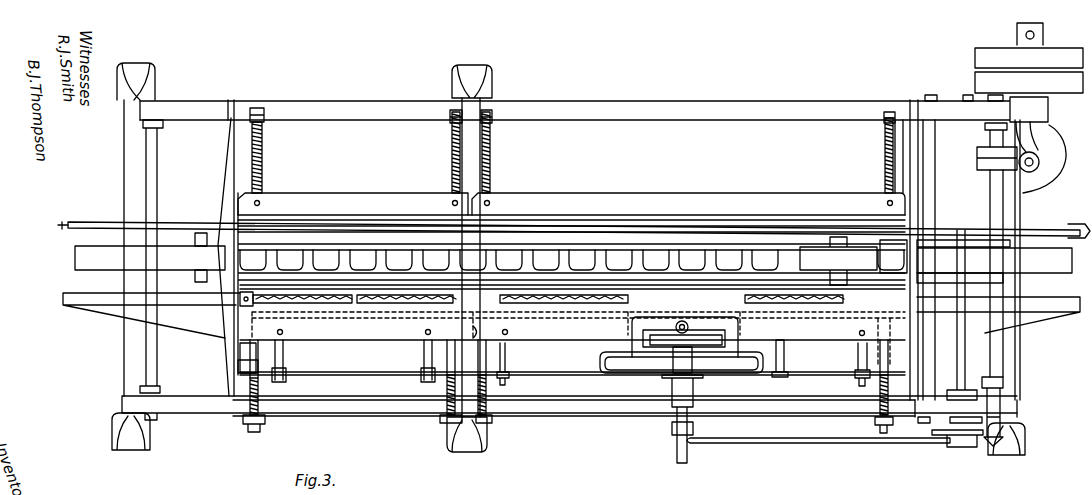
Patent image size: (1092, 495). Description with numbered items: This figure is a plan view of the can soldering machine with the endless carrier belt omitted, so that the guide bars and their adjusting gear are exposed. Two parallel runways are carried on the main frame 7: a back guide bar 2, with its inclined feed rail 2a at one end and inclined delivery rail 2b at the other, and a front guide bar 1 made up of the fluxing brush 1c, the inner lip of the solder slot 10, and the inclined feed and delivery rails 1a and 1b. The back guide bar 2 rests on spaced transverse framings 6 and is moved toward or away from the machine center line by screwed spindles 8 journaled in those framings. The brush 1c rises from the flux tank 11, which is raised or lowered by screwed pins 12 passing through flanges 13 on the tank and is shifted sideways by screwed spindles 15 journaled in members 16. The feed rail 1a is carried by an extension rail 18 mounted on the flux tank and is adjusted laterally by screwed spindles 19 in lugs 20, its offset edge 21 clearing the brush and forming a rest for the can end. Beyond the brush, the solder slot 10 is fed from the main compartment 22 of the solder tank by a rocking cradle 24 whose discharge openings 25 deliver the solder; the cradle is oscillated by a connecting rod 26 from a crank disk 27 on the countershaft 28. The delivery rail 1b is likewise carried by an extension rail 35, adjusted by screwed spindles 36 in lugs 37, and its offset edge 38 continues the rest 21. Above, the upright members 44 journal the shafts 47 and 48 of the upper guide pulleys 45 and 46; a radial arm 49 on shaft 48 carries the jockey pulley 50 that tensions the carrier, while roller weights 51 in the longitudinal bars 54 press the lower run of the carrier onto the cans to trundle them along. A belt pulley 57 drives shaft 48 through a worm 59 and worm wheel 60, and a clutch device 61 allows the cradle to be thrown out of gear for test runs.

The front guide bar 1 is at (618, 297).
The inclined feed rail 1a is at (487, 243).
The inclined delivery rail 1b is at (1023, 308).
The fluxing brush 1c is at (395, 302).
The back guide bar 2 is at (360, 218).
The inclined feed rail 2a is at (100, 222).
The inclined delivery rail 2b is at (1047, 231).
The transverse framings 6 is at (482, 167).
The main frame 7 is at (602, 110).
The screwed spindles 8 is at (262, 151).
The solder slot 10 is at (747, 300).
The flux tank 11 is at (296, 290).
The screwed pins 12 is at (241, 360).
The flanges 13 is at (245, 364).
The screwed spindles 15 is at (258, 404).
The members 16 is at (257, 418).
The extension rail 18 is at (360, 333).
The screwed spindles 19 is at (285, 350).
The lugs 20 is at (284, 378).
The offset edge 21 is at (302, 303).
The main solder compartment 22 is at (753, 373).
The rocking cradle 24 is at (620, 360).
The discharge openings 25 is at (697, 343).
The connecting rod 26 is at (838, 443).
The crank disk 27 is at (970, 437).
The countershaft 28 is at (960, 345).
The extension rail 35 is at (780, 340).
The screwed spindles 36 is at (506, 355).
The lugs 37 is at (508, 376).
The offset edge 38 is at (580, 310).
The upright members 44 is at (200, 110).
The upper guide pulley 45 is at (66, 226).
The upper guide pulley 46 is at (1062, 262).
The shaft 47 is at (157, 167).
The shaft 48 is at (1003, 347).
The radial arm 49 is at (943, 228).
The jockey pulley 50 is at (853, 261).
The roller weights 51 is at (392, 263).
The longitudinal bars 54 is at (592, 268).
The belt pulley 57 is at (983, 80).
The worm 59 is at (1035, 193).
The worm wheel 60 is at (982, 160).
The clutch device 61 is at (1003, 385).